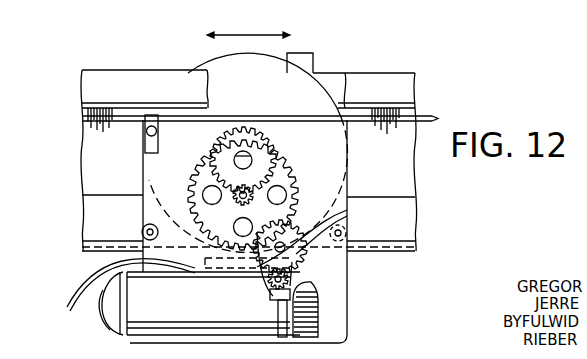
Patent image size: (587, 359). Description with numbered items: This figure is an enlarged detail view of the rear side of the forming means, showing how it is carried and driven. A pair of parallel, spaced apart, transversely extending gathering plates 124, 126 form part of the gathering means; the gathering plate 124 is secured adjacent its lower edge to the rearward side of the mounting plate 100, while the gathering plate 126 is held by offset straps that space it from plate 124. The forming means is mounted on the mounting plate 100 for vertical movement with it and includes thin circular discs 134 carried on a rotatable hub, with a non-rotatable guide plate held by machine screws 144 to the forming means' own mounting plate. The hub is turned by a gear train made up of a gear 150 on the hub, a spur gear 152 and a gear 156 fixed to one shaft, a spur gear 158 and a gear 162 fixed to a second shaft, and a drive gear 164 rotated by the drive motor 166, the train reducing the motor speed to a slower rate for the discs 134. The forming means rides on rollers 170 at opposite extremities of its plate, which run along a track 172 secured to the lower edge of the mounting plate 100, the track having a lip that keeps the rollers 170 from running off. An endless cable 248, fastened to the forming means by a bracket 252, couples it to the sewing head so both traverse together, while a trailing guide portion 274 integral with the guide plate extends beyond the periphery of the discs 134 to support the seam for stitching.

The mounting plate 100 is at (410, 222).
The gathering plate 124 is at (404, 191).
The gathering plate 126 is at (403, 93).
The circular disc 134 is at (212, 64).
The machine screws 144 is at (344, 288).
The gear 150 is at (290, 141).
The spur gear 152 is at (238, 202).
The gear 156 is at (287, 163).
The spur gear 158 is at (347, 213).
The gear 162 is at (295, 236).
The drive gear 164 is at (290, 285).
The drive motor 166 is at (213, 305).
The rollers 170 is at (141, 230).
The track 172 is at (416, 250).
The endless cable 248 is at (80, 122).
The bracket 252 is at (162, 148).
The trailing guide portion 274 is at (305, 60).